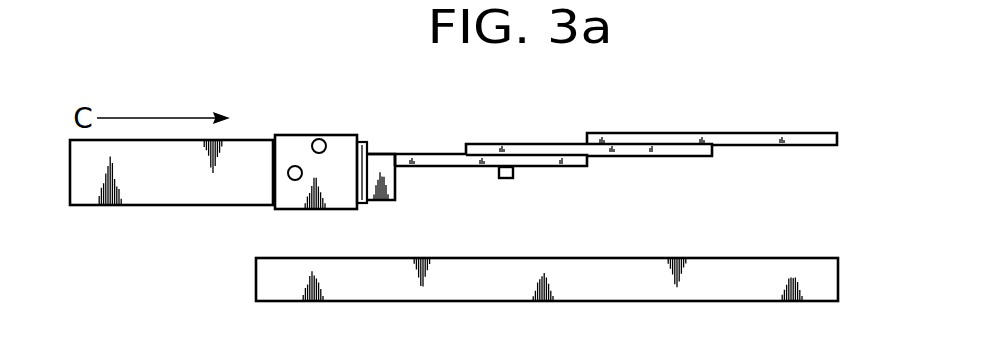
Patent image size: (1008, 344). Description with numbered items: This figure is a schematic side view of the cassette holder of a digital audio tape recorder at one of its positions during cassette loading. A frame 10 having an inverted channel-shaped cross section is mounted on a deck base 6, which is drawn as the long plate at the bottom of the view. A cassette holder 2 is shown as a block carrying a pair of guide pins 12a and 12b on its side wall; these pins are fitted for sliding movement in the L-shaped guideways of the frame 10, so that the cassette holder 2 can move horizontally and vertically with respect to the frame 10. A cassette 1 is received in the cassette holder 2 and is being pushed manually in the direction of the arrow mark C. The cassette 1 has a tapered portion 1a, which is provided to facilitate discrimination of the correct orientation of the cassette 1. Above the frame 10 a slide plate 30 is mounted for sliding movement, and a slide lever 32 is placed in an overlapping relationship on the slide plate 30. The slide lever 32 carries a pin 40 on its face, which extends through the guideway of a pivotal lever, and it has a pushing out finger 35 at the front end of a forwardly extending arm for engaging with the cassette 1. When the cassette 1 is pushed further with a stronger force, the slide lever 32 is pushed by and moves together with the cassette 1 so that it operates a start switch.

The cassette 1 is at (124, 205).
The tapered portion 1a is at (364, 141).
The cassette holder 2 is at (342, 152).
The guide pin 12a is at (295, 166).
The guide pin 12b is at (319, 139).
The pushing out finger 35 is at (383, 200).
The slide lever 32 is at (452, 168).
The pin 40 is at (513, 172).
The slide plate 30 is at (700, 158).
The frame 10 is at (789, 138).
The deck base 6 is at (834, 284).